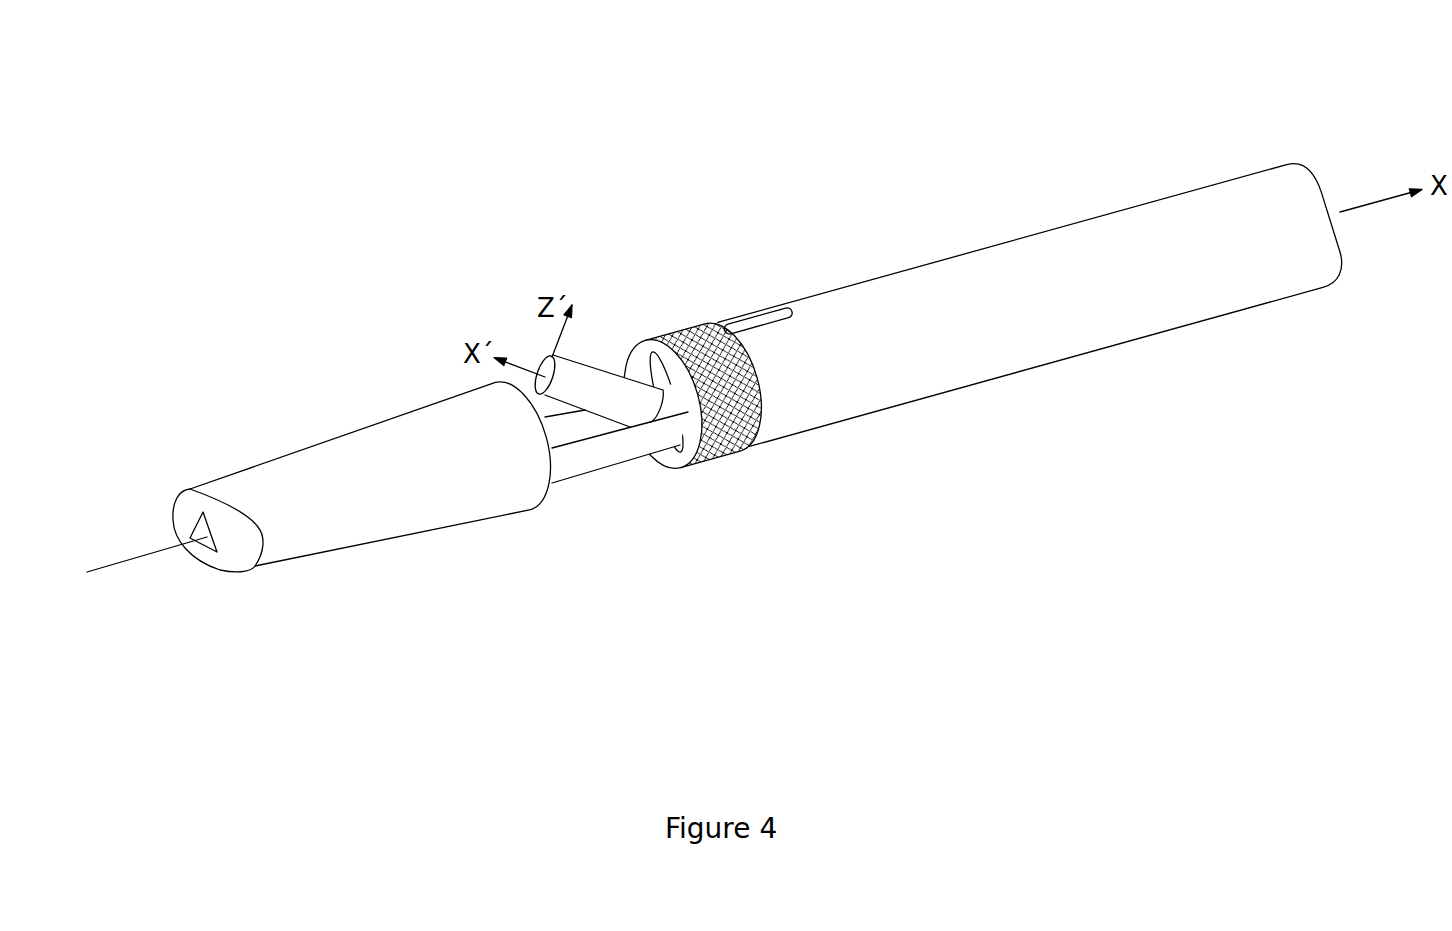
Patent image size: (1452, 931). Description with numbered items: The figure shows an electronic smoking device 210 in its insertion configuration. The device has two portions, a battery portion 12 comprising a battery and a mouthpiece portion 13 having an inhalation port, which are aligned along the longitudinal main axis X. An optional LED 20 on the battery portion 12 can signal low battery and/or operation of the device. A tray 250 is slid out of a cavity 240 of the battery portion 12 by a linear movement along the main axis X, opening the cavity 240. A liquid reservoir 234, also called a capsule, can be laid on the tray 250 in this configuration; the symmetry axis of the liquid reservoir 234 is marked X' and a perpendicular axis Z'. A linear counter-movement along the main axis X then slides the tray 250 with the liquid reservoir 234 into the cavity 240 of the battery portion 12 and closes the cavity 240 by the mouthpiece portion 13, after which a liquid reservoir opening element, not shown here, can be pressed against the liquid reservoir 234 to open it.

The electronic smoking device 210 is at (947, 118).
The battery portion 12 is at (978, 372).
The mouthpiece portion 13 is at (443, 515).
The light-emitting diode (LED) 20 is at (770, 310).
The liquid reservoir 234 is at (613, 370).
The cavity 240 is at (657, 340).
The tray 250 is at (605, 463).